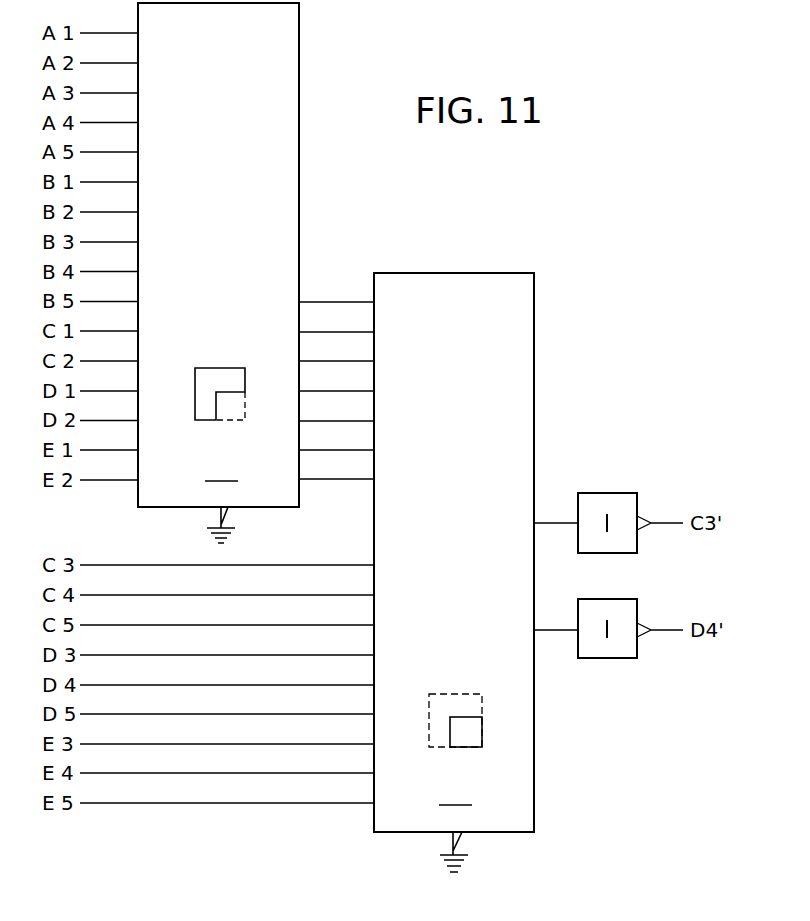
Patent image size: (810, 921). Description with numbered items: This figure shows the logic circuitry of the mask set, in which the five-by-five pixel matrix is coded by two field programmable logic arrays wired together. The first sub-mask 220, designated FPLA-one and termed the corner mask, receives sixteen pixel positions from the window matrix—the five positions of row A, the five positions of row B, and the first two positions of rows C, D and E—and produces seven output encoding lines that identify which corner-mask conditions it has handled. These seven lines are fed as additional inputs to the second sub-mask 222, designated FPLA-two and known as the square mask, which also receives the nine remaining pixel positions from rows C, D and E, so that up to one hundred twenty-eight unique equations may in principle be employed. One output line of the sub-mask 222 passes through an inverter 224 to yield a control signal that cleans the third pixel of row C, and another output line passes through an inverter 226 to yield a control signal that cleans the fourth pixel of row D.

The sub-mask 220 is at (290, 29).
The sub-mask 222 is at (497, 282).
The inverter 224 is at (605, 497).
The inverter 226 is at (603, 605).